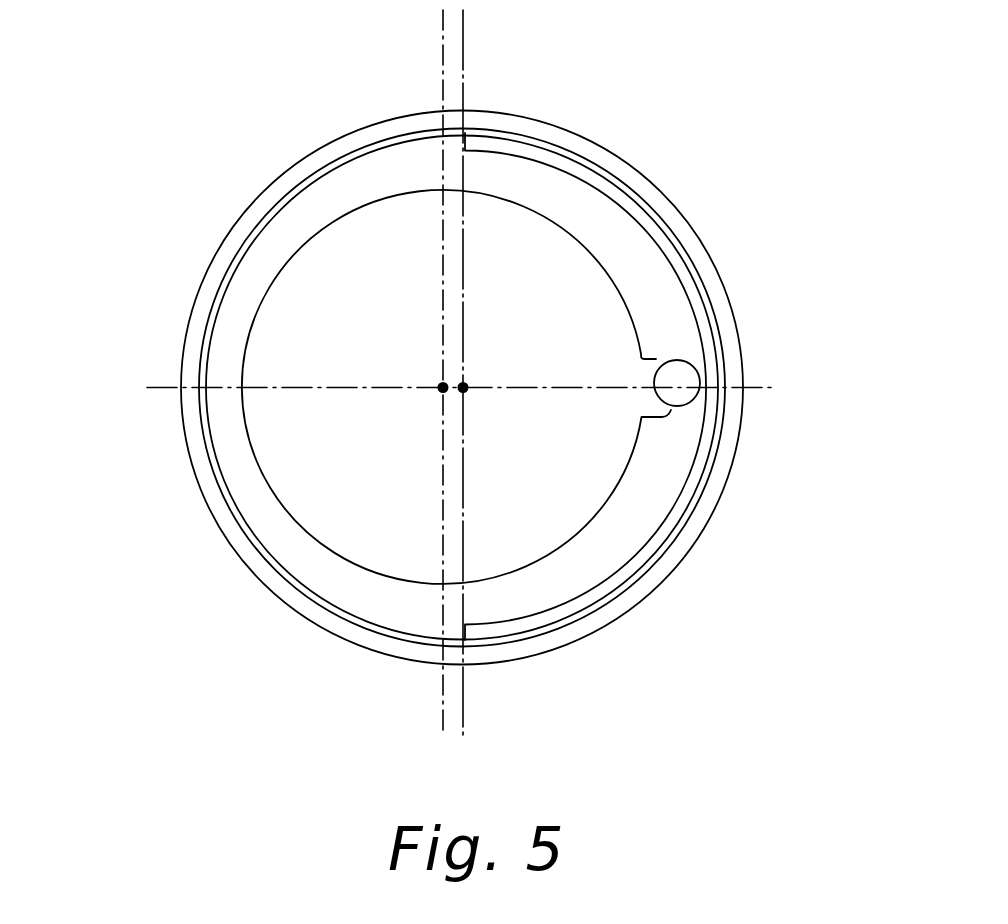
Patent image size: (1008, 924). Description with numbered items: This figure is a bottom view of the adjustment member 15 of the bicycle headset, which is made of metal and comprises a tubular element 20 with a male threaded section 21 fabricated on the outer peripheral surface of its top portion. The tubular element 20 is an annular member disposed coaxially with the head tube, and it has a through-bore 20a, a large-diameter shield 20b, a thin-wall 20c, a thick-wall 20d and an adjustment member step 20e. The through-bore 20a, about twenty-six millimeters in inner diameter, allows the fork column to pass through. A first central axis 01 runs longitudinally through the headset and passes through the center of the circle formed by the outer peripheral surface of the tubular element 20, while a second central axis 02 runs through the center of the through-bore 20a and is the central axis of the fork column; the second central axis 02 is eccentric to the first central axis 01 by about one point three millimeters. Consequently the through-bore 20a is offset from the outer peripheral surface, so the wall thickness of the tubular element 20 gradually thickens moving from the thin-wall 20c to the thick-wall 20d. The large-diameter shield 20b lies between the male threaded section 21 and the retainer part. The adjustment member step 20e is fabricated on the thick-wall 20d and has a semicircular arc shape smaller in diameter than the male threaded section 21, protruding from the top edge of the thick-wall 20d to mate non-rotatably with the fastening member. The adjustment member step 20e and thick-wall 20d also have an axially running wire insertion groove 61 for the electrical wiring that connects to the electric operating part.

The adjustment member 15 is at (704, 205).
The tubular element 20 is at (348, 132).
The through-bore 20a is at (572, 242).
The large-diameter shield 20b is at (667, 583).
The thin-wall 20c is at (233, 403).
The thick-wall 20d is at (697, 452).
The adjustment member step 20e is at (658, 313).
The male threaded section 21 is at (580, 162).
The wire insertion groove 61 is at (697, 407).
The first central axis 01 is at (463, 387).
The second central axis 02 is at (443, 387).